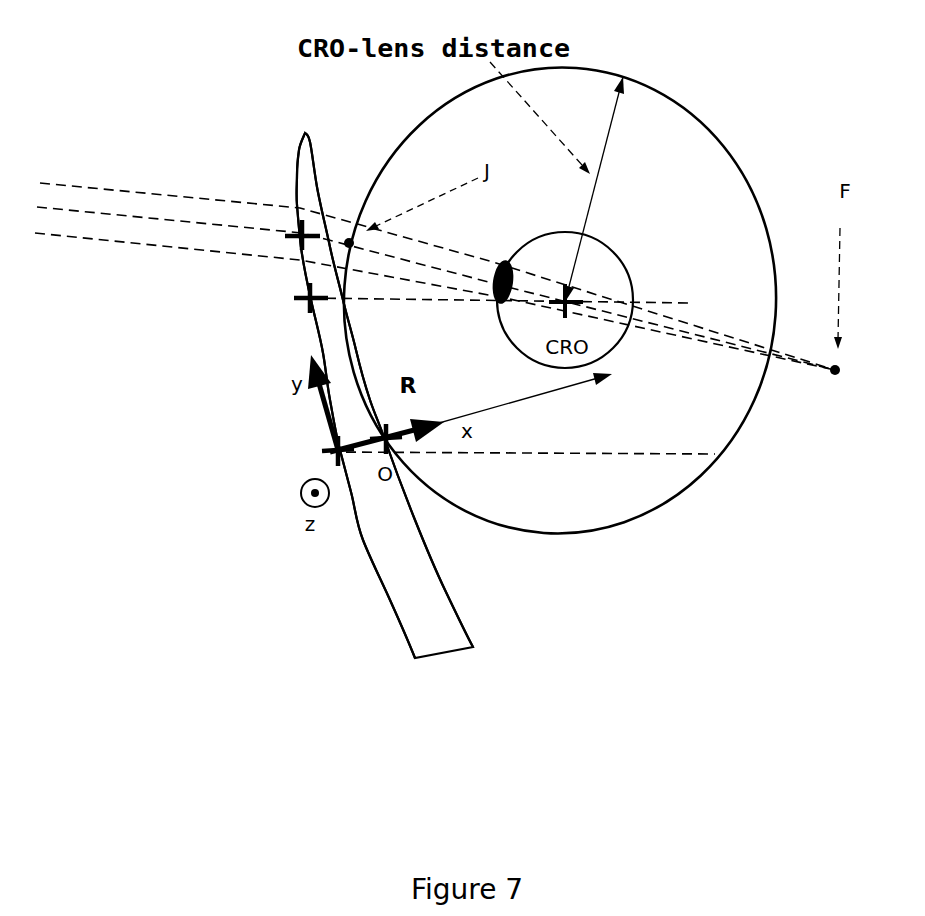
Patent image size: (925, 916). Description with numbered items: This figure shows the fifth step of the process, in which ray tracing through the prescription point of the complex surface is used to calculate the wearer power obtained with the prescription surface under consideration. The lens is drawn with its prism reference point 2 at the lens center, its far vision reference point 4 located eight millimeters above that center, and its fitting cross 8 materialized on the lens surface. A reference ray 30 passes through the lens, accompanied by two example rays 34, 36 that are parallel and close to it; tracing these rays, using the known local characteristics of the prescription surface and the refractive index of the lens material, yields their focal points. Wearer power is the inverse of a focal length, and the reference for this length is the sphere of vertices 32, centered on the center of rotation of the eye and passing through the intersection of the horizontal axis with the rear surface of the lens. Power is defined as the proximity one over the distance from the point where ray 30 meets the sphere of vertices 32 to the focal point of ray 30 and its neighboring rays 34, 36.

The prism reference point 2 is at (296, 457).
The far vision reference point 4 is at (274, 246).
The fitting cross 8 is at (285, 302).
The ray 30 is at (127, 206).
The sphere of vertices 32 is at (720, 122).
The ray 34 is at (185, 241).
The ray 36 is at (80, 178).